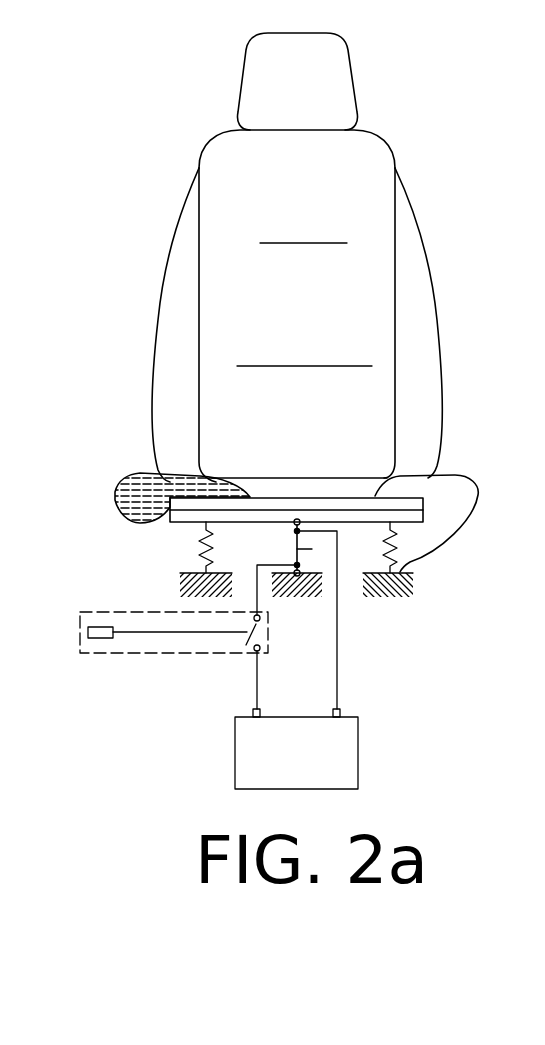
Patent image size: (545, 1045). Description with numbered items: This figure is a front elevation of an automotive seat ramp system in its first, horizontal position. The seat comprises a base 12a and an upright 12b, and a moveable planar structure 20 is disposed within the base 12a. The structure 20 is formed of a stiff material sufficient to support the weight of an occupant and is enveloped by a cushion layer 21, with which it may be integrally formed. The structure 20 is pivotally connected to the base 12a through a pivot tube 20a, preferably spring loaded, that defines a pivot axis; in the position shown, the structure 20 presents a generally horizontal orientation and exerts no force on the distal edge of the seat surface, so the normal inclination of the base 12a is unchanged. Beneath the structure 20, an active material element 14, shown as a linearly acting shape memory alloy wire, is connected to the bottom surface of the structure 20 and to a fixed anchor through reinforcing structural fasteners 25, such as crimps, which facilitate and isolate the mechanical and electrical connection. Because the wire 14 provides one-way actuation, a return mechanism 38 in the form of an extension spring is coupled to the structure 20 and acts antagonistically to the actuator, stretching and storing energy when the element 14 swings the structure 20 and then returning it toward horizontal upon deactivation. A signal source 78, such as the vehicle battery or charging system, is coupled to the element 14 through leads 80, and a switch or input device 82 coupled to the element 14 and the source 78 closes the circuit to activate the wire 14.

The seat base 12a is at (532, 438).
The upright 12b is at (333, 208).
The active material element 14 is at (312, 549).
The moveable planar structure 20 is at (373, 494).
The pivot tube 20a is at (423, 522).
The cushion layer 21 is at (130, 490).
The reinforcing structural fasteners 25 is at (300, 521).
The return mechanism 38 is at (197, 572).
The signal source 78 is at (316, 770).
The leads 80 is at (338, 618).
The switch or input device 82 is at (80, 618).